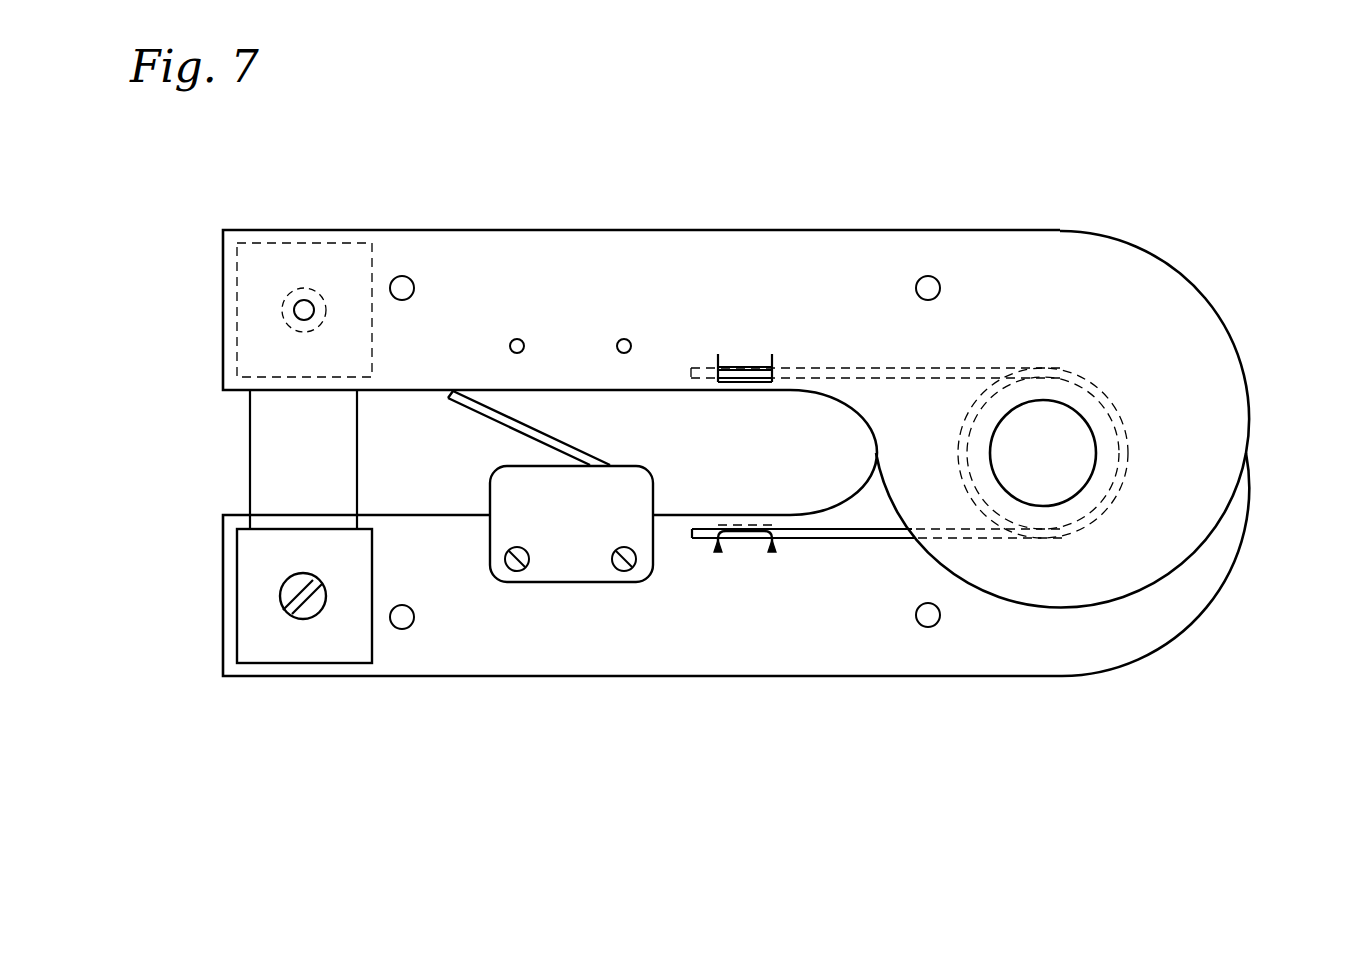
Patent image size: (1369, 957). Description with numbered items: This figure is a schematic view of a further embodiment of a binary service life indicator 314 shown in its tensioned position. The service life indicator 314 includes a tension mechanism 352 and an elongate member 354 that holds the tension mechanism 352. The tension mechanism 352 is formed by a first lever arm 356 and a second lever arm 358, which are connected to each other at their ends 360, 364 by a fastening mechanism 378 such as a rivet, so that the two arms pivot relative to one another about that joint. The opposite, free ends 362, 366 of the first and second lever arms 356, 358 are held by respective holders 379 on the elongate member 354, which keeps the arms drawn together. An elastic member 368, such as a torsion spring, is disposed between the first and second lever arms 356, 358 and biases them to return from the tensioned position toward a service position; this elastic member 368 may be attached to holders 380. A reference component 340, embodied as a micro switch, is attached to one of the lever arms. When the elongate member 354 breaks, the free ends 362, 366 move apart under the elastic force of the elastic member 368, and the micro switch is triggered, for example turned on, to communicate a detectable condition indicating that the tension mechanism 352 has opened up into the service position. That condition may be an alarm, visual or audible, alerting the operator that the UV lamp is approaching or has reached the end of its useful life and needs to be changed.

The service life indicator 314 is at (731, 431).
The reference component 340 is at (547, 582).
The tension mechanism 352 is at (753, 620).
The elongate member 354 is at (250, 433).
The first lever arm 356 is at (778, 391).
The second lever arm 358 is at (655, 677).
The end of first lever arm 360 is at (1235, 345).
The free end of first lever arm 362 is at (257, 229).
The end of second lever arm 364 is at (1185, 630).
The free end of second lever arm 366 is at (248, 677).
The elastic member 368 is at (858, 538).
The fastening mechanism 378 is at (1058, 402).
The holder 379 is at (237, 622).
The holder 380 is at (748, 542).